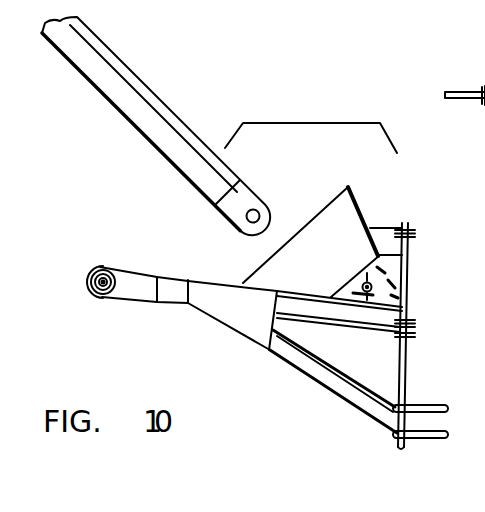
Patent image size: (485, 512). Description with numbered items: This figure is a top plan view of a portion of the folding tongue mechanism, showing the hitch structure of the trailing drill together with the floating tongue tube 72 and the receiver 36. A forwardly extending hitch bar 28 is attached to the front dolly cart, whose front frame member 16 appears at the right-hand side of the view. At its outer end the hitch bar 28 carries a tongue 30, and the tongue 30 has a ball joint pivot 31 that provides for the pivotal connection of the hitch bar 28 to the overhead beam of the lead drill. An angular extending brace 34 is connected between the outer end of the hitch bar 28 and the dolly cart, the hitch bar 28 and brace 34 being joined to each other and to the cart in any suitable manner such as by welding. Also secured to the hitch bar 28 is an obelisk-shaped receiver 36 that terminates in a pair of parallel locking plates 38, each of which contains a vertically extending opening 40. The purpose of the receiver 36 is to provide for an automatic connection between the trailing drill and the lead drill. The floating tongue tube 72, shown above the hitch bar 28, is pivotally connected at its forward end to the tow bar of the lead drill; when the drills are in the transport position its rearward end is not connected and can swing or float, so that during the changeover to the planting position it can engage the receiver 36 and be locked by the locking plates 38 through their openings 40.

The front frame member 16 is at (410, 265).
The hitch bar 28 is at (170, 280).
The tongue 30 is at (92, 273).
The ball joint pivot 31 is at (103, 297).
The brace 34 is at (333, 397).
The receiver 36 is at (348, 224).
The locking plates 38 is at (392, 297).
The opening 40 is at (368, 284).
The floating tongue tube 72 is at (131, 80).